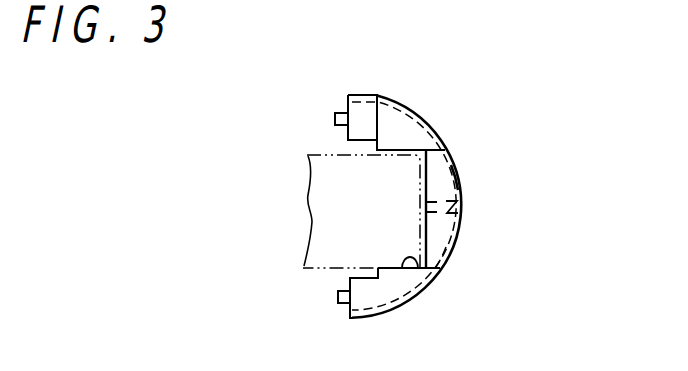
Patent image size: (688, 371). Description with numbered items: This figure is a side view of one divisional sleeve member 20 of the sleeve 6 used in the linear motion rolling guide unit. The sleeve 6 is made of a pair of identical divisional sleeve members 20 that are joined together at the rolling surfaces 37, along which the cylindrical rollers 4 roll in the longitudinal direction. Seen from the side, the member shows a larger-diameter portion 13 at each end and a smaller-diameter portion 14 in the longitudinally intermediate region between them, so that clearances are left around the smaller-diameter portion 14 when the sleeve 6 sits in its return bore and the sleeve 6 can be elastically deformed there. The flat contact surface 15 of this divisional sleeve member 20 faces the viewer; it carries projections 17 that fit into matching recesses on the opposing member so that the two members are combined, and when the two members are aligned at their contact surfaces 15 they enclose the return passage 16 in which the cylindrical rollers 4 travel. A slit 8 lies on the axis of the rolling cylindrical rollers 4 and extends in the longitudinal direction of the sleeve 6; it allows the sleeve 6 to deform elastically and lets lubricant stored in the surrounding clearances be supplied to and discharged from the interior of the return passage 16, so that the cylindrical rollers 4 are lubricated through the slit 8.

The cylindrical roller 4 is at (322, 184).
The sleeve 6 is at (437, 138).
The slit 8 is at (461, 207).
The larger-diameter portion 13 is at (450, 175).
The smaller-diameter portion 14 is at (452, 253).
The contact surface 15 is at (349, 313).
The return passage 16 is at (357, 208).
The projection 17 is at (335, 117).
The divisional sleeve member 20 is at (401, 111).
The rolling surface 37 is at (411, 266).